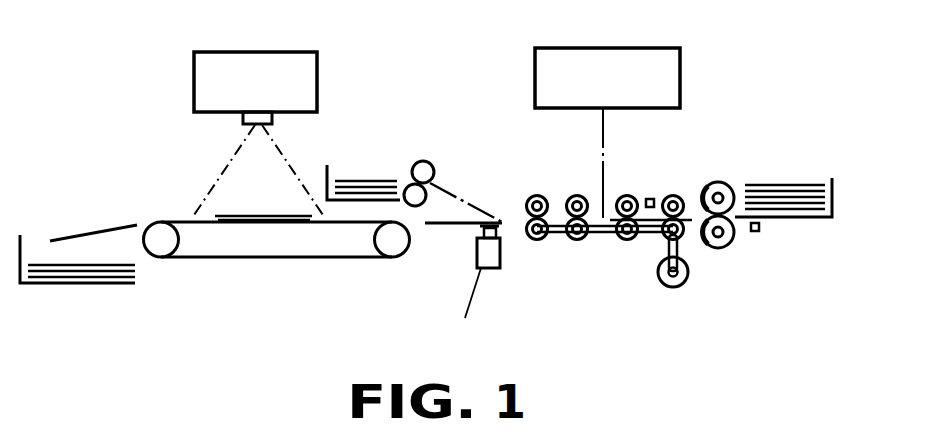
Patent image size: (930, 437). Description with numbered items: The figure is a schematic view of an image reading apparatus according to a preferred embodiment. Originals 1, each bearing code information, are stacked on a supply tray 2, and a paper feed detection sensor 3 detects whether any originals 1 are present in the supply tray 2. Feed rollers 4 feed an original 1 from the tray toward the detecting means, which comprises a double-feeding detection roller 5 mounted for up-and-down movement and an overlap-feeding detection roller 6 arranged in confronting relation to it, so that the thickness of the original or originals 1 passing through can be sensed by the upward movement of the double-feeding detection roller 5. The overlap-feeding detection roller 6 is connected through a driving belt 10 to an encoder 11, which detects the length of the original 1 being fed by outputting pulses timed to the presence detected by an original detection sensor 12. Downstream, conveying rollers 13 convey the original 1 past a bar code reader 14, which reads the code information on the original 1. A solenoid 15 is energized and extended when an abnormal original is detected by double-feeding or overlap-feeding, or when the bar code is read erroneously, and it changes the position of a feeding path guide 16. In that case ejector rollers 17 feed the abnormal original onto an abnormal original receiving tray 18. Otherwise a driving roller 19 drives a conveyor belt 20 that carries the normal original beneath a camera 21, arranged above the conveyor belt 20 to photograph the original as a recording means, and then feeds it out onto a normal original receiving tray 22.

The original 1 is at (788, 184).
The supply tray 2 is at (805, 220).
The paper feed detection sensor 3 is at (757, 233).
The feed rollers 4 is at (722, 183).
The double-feeding detection roller 5 is at (673, 195).
The overlap-feeding detection roller 6 is at (665, 238).
The driving belt 10 is at (684, 252).
The encoder 11 is at (677, 288).
The original detection sensor 12 is at (650, 196).
The conveying rollers 13 is at (537, 195).
The bar code reader 14 is at (608, 48).
The solenoid 15 is at (490, 268).
The feeding path guide 16 is at (451, 203).
The ejector rollers 17 is at (428, 162).
The abnormal original receiving tray 18 is at (337, 170).
The driving roller 19 is at (393, 258).
The conveyor belt 20 is at (205, 258).
The camera 21 is at (275, 52).
The normal original receiving tray 22 is at (63, 285).